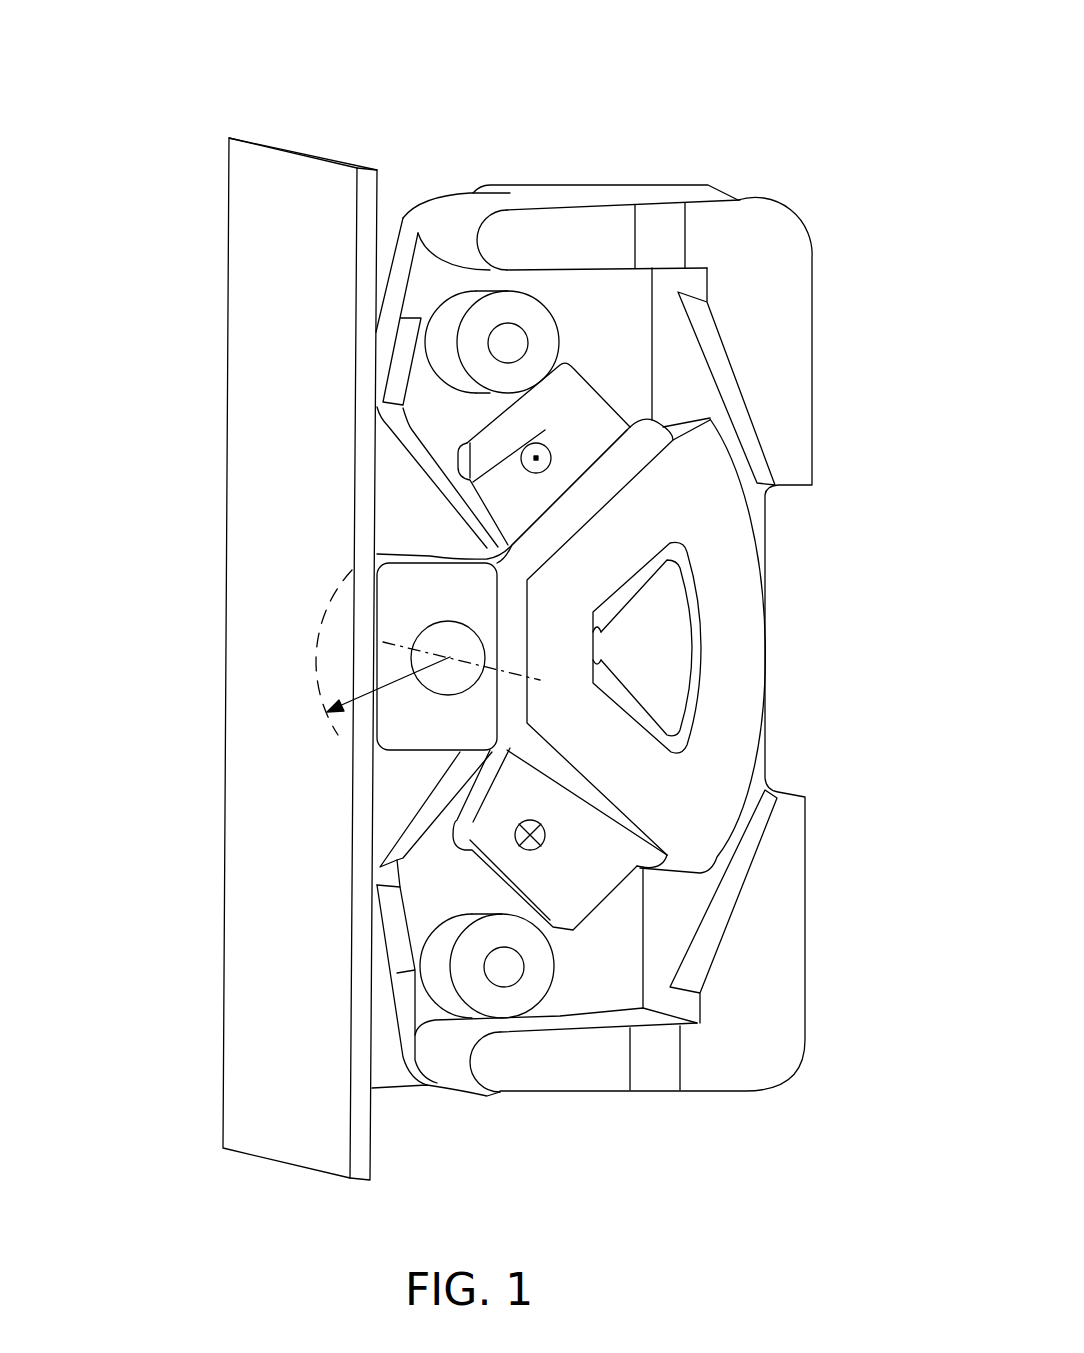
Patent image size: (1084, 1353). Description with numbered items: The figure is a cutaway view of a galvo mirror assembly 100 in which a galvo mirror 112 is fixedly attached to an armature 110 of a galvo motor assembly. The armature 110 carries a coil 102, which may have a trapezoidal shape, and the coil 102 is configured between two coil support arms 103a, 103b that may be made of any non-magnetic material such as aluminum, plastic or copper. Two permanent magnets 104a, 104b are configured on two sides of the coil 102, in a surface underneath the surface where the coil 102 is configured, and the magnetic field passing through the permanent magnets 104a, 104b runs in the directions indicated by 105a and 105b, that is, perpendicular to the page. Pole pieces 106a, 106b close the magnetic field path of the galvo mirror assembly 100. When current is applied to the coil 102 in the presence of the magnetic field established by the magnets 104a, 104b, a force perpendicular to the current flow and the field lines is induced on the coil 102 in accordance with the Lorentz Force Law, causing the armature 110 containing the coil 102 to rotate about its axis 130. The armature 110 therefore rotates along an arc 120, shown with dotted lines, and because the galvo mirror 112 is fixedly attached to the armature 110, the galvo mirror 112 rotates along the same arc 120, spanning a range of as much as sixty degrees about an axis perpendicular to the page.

The galvo mirror assembly 100 is at (192, 48).
The coil 102 is at (720, 560).
The coil support arm 103a is at (712, 418).
The coil support arm 103b is at (670, 852).
The permanent magnet 104a is at (573, 447).
The permanent magnet 104b is at (583, 878).
The magnetic field direction 105a is at (550, 443).
The magnetic field direction 105b is at (540, 847).
The pole piece 106a is at (540, 303).
The pole piece 106b is at (517, 995).
The armature 110 is at (395, 617).
The galvo mirror 112 is at (227, 297).
The arc 120 is at (327, 712).
The axis 130 is at (398, 645).